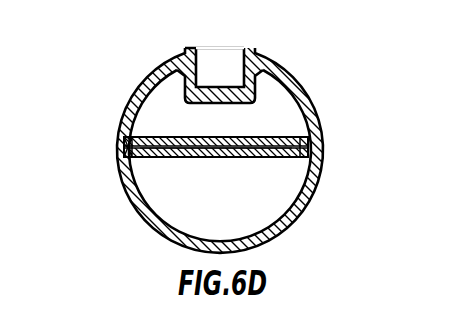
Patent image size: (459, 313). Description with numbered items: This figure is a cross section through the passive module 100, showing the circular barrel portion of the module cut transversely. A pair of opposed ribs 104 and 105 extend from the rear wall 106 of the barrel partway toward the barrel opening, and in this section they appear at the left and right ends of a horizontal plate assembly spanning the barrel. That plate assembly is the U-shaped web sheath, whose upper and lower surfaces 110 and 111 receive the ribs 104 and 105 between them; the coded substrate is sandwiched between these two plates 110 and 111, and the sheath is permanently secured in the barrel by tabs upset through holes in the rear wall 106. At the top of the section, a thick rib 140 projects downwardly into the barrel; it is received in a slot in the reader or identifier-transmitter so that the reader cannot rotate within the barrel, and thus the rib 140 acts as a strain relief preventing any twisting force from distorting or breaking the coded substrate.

The passive module 100 is at (287, 67).
The rib 104 is at (318, 140).
The rib 105 is at (123, 152).
The rear wall 106 is at (233, 204).
The upper surface 110 is at (277, 137).
The lower surface 111 is at (266, 158).
The thick rib 140 is at (200, 97).